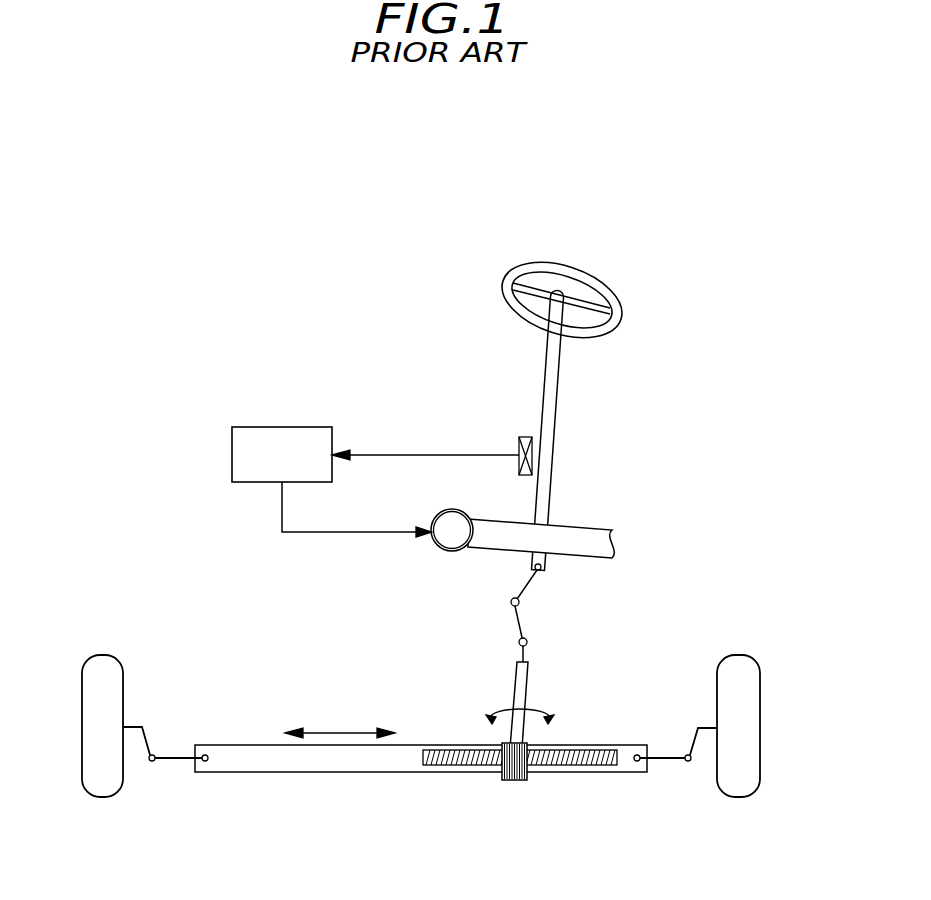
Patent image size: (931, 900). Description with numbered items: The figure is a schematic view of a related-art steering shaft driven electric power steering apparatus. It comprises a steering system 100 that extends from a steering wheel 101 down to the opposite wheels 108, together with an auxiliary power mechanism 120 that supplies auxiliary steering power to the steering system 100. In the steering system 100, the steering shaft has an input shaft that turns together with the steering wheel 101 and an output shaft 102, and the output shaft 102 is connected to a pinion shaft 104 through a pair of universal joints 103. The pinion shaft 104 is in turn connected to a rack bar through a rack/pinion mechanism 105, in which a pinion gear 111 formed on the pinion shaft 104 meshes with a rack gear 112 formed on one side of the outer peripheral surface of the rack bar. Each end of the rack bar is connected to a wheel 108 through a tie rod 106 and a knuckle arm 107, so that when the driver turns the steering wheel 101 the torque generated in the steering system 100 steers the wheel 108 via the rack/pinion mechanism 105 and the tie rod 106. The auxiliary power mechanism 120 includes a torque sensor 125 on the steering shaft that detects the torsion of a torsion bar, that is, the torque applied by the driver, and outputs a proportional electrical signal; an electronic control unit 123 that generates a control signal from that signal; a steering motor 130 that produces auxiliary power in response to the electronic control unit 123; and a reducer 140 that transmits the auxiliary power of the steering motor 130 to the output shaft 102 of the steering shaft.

The steering system 100 is at (308, 241).
The steering wheel 101 is at (503, 290).
The output shaft 102 is at (557, 392).
The universal joints 103 is at (528, 583).
The pinion shaft 104 is at (514, 688).
The rack/pinion mechanism 105 is at (508, 863).
The tie rod 106 is at (670, 755).
The knuckle arm 107 is at (137, 722).
The wheel 108 is at (748, 665).
The pinion gear 111 is at (510, 780).
The rack gear 112 is at (557, 765).
The auxiliary power mechanism 120 is at (210, 363).
The electronic control unit (ECU) 123 is at (317, 427).
The torque sensor 125 is at (519, 448).
The steering motor 130 is at (450, 538).
The reducer 140 is at (553, 523).